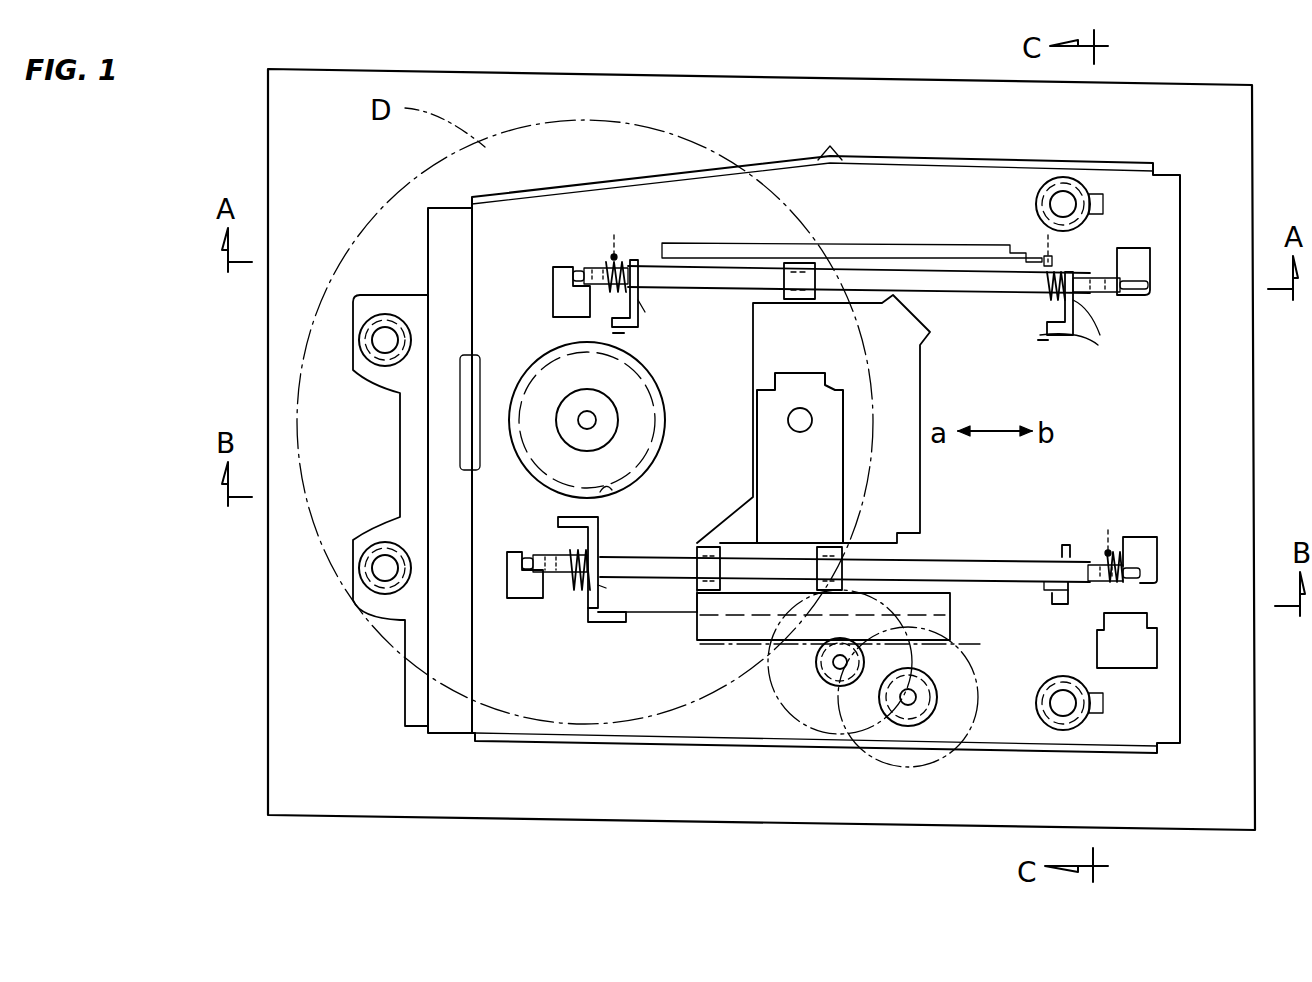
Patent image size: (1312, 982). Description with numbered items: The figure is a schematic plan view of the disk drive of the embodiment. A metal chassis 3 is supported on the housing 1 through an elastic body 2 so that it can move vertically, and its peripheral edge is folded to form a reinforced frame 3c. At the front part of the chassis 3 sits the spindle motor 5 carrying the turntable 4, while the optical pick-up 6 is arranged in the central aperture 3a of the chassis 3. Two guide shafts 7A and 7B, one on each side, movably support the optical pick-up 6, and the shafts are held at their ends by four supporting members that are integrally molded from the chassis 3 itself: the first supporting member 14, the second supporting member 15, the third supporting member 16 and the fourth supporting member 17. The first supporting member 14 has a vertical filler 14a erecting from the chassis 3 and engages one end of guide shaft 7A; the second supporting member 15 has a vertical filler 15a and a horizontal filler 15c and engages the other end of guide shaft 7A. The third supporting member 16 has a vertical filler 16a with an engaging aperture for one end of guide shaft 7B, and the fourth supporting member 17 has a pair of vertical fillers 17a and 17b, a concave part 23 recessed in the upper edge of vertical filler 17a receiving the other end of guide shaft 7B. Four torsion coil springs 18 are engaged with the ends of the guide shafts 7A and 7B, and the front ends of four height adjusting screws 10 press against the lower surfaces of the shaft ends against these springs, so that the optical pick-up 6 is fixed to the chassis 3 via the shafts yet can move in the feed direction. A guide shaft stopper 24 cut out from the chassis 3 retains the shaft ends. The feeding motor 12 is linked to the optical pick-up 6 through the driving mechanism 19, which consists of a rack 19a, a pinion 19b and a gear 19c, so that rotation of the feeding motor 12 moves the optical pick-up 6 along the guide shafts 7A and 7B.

The housing 1 is at (681, 92).
The elastic body 2 is at (385, 545).
The chassis 3 is at (927, 160).
The central aperture 3a is at (732, 447).
The reinforced frame 3c is at (450, 226).
The turntable 4 is at (546, 345).
The spindle motor 5 is at (540, 450).
The optical pick-up 6 is at (812, 502).
The guide shaft 7A is at (956, 282).
The guide shaft 7B is at (957, 567).
The height adjusting screw 10 is at (603, 265).
The feeding motor 12 is at (932, 758).
The first supporting member 14 is at (647, 323).
The vertical filler 14a is at (648, 312).
The second supporting member 15 is at (1041, 300).
The vertical filler 15a is at (1100, 338).
The horizontal filler 15c is at (1073, 370).
The third supporting member 16 is at (602, 543).
The vertical filler 16a is at (606, 588).
The fourth supporting member 17 is at (1049, 545).
The vertical filler 17a is at (1052, 602).
The vertical filler 17b is at (1152, 637).
The torsion coil spring 18 is at (624, 262).
The driving mechanism 19 is at (727, 711).
The rack 19a is at (725, 646).
The pinion 19b is at (808, 698).
The gear 19c is at (860, 750).
The concave part 23 is at (1050, 584).
The guide shaft stopper 24 is at (553, 290).